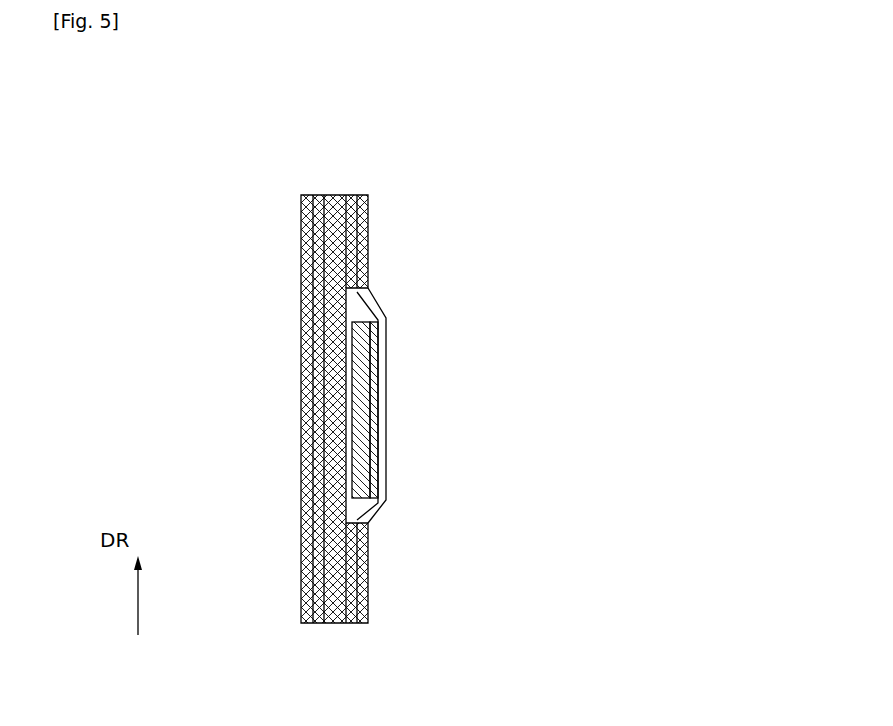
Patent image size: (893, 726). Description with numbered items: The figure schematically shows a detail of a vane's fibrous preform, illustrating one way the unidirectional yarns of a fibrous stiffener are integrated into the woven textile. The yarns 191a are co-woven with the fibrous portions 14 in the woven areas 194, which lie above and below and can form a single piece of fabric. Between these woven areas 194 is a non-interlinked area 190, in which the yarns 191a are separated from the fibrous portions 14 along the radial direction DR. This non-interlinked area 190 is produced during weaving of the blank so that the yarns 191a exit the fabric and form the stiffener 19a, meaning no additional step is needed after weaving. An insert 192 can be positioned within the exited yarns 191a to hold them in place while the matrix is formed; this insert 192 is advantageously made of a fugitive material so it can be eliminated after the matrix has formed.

The fibrous portions 14 is at (233, 163).
The woven areas 194 is at (368, 247).
The non-interlinked area 190 is at (290, 293).
The fibrous stiffener 19a is at (400, 445).
The yarns 191a is at (383, 350).
The insert 192 is at (370, 407).